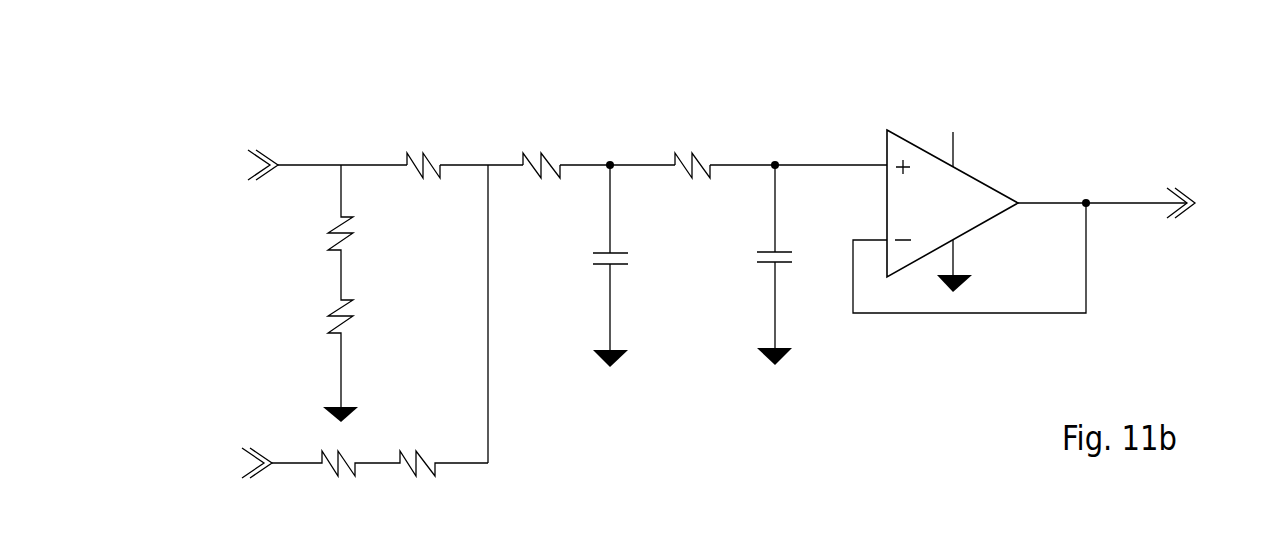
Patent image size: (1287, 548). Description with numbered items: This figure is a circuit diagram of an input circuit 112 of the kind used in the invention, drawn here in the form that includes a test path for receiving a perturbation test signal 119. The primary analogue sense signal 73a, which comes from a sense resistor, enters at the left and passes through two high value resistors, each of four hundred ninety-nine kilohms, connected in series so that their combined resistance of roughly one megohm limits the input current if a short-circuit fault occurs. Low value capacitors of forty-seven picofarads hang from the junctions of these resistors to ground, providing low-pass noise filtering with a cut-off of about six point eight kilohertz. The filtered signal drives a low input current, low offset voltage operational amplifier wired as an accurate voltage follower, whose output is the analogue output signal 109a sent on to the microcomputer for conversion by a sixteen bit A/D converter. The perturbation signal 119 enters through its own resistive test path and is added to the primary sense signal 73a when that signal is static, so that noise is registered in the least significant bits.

The input circuit 112 is at (283, 58).
The signal 73a is at (229, 165).
The perturbation signal 119 is at (226, 463).
The analogue output signal 109a is at (1220, 204).